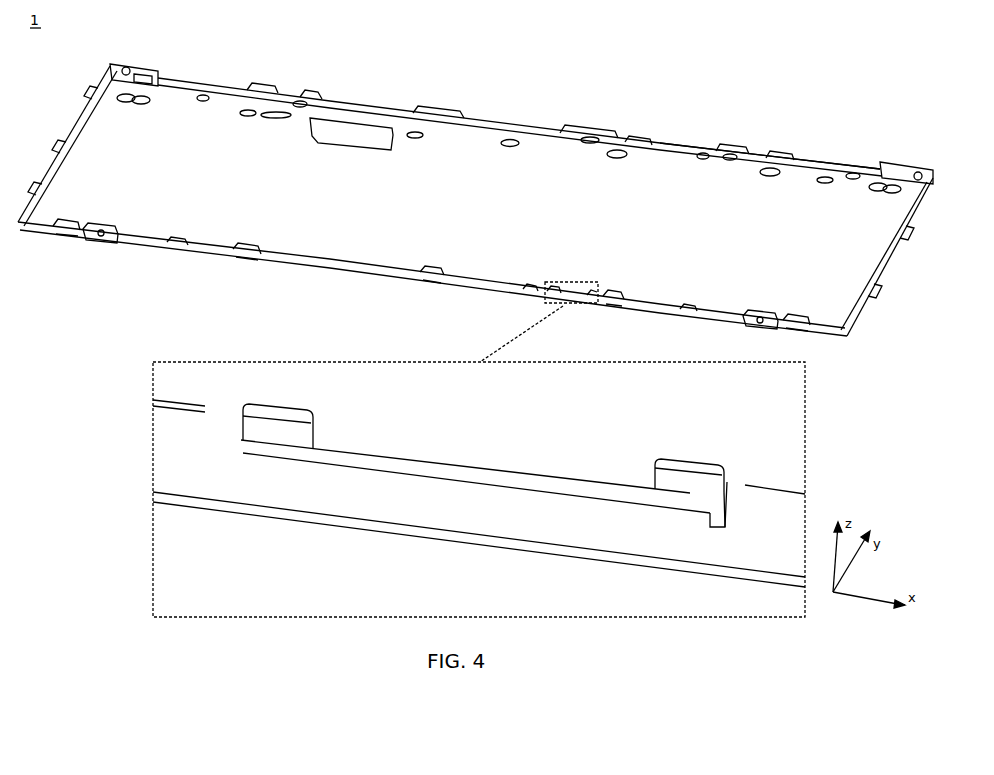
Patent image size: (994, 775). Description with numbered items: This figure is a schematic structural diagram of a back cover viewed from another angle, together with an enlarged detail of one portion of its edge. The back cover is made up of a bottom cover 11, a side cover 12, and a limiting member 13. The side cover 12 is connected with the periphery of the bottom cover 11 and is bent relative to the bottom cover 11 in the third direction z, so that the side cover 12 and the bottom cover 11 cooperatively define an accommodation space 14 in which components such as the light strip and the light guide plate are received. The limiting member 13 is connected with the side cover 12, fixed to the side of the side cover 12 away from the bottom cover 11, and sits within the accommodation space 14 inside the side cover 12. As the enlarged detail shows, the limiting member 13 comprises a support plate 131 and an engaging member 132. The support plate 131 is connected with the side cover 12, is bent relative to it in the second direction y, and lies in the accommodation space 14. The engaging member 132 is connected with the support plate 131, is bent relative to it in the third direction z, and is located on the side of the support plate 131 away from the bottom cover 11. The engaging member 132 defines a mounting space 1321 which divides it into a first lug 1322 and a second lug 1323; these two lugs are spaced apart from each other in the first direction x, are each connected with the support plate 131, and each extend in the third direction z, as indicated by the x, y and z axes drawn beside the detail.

The bottom cover 11 is at (543, 154).
The side cover 12 is at (466, 290).
The limiting member 13 is at (577, 303).
The accommodation space 14 is at (795, 186).
The support plate 131 is at (538, 482).
The engaging member 132 is at (416, 457).
The mounting space 1321 is at (357, 440).
The first lug 1322 is at (698, 478).
The second lug 1323 is at (294, 411).